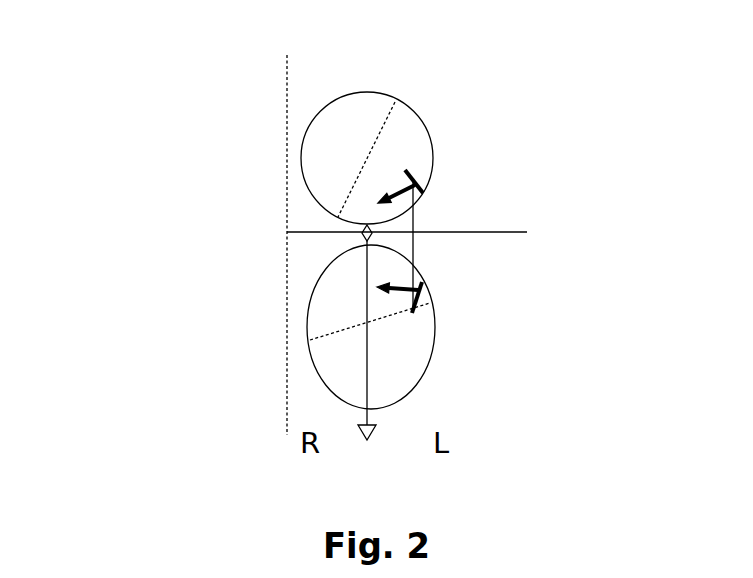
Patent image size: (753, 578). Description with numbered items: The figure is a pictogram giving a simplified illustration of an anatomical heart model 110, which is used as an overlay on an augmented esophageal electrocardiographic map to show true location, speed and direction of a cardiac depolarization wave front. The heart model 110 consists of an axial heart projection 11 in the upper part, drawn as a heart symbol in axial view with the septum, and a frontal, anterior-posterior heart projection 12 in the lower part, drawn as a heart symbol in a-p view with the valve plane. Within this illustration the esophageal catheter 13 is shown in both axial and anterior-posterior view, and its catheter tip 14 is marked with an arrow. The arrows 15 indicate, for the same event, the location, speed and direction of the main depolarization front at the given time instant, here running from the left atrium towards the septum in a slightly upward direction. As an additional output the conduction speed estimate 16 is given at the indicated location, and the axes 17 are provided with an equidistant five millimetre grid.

The anatomical heart model 110 is at (403, 72).
The axial heart projection 11 is at (435, 153).
The frontal heart projection 12 is at (433, 375).
The esophageal catheter 13 is at (362, 235).
The catheter tip 14 is at (374, 432).
The arrows 15 is at (435, 180).
The conduction speed estimate 16 is at (293, 488).
The axes 17 is at (284, 232).